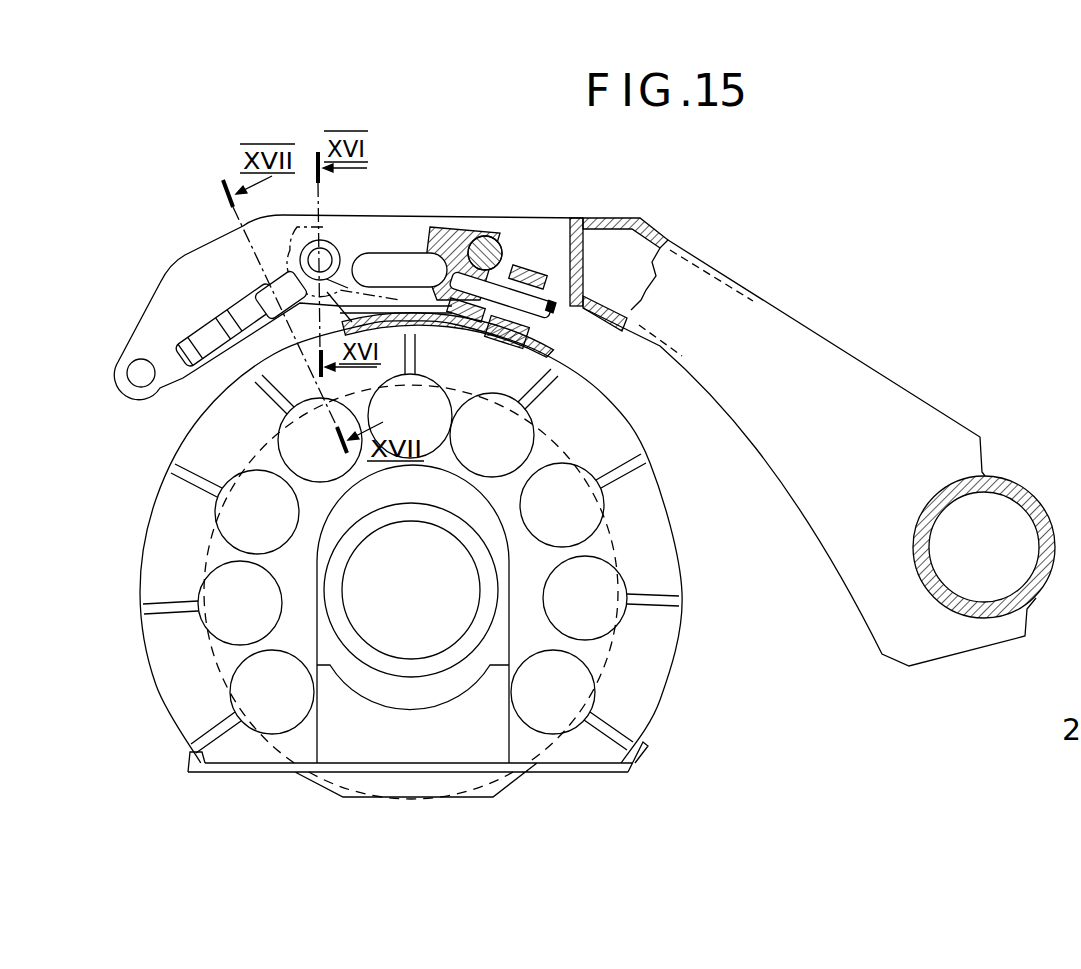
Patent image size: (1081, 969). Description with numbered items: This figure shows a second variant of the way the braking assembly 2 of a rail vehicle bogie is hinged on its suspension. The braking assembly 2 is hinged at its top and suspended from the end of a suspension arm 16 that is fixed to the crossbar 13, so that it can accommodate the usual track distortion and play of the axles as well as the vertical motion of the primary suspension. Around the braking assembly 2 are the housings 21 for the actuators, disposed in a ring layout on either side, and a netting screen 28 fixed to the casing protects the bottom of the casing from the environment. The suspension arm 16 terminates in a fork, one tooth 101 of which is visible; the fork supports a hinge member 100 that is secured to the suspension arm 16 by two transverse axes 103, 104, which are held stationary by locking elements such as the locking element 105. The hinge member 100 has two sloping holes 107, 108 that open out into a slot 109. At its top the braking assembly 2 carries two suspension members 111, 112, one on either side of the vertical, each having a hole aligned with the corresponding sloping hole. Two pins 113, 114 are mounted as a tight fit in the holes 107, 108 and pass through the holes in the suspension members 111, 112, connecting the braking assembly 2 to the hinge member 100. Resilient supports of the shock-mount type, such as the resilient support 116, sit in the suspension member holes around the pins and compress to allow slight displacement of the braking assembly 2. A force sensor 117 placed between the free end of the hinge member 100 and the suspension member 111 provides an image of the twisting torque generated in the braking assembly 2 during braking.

The braking assembly 2 is at (131, 602).
The crossbar 13 is at (1021, 485).
The suspension arm 16 is at (851, 365).
The housings for the actuators 21 is at (573, 693).
The netting screen 28 is at (410, 780).
The hinge member 100 is at (197, 263).
The tooth of the fork 101 is at (543, 233).
The transverse axis 103 is at (345, 262).
The transverse axis 104 is at (497, 240).
The locking element 105 is at (327, 257).
The sloping hole 107 is at (387, 327).
The sloping hole 108 is at (452, 240).
The slot 109 is at (437, 257).
The suspension member 111 is at (272, 287).
The suspension member 112 is at (573, 360).
The pin 113 is at (240, 352).
The pin 114 is at (553, 307).
The resilient support 116 is at (547, 290).
The force sensor 117 is at (217, 330).